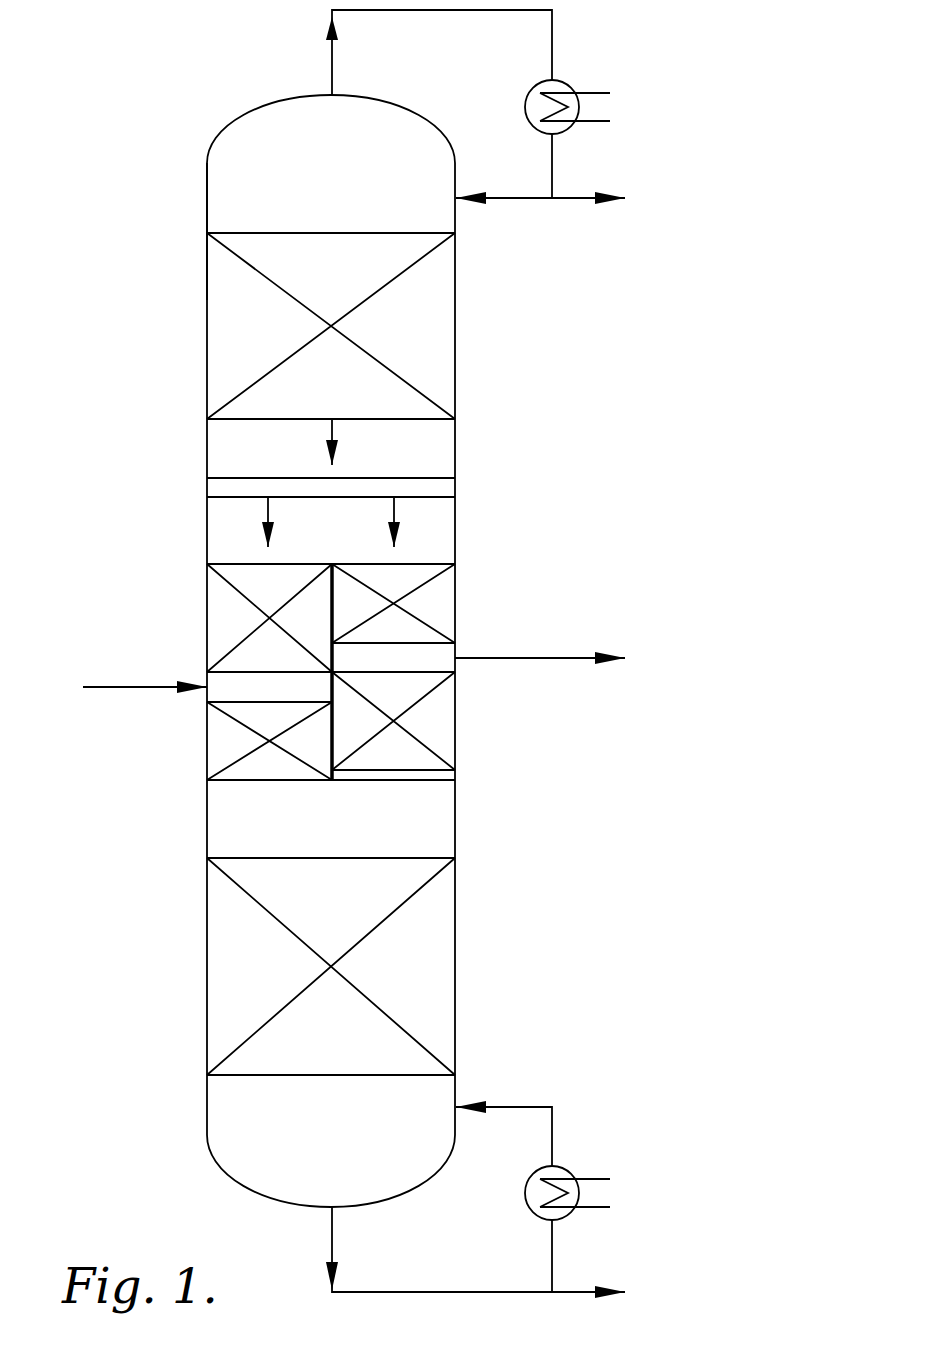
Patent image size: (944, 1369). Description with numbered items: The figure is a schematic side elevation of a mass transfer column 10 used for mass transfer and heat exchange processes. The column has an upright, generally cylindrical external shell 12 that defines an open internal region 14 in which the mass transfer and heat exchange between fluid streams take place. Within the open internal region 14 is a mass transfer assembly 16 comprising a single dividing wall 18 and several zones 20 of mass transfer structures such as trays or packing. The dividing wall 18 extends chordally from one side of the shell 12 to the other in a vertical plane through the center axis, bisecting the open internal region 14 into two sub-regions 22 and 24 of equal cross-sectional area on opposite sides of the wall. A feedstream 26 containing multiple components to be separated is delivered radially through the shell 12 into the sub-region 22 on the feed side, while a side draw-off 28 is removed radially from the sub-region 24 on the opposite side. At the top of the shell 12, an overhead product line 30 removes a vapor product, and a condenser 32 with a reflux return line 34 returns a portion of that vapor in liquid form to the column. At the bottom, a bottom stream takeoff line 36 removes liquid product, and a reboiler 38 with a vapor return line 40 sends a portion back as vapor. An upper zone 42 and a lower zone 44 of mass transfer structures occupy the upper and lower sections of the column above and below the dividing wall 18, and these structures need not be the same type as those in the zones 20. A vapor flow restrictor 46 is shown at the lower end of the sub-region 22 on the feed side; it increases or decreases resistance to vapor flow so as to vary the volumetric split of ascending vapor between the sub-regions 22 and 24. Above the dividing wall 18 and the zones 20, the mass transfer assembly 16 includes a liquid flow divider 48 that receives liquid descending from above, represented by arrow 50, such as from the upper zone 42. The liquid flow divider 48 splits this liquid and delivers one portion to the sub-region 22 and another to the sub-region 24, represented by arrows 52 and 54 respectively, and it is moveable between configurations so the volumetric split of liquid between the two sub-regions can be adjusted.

The mass transfer column 10 is at (228, 122).
The external shell 12 is at (206, 192).
The open internal region 14 is at (292, 135).
The mass transfer assembly 16 is at (339, 698).
The dividing wall 18 is at (332, 737).
The zones of mass transfer structures 20 is at (220, 604).
The sub-region 22 is at (280, 790).
The sub-region 24 is at (381, 790).
The feedstream 26 is at (115, 687).
The side draw-off 28 is at (535, 658).
The overhead product line 30 is at (332, 66).
The condenser 32 is at (572, 86).
The reflux return line 34 is at (527, 198).
The bottom stream takeoff line 36 is at (332, 1228).
The reboiler 38 is at (572, 1172).
The vapor return line 40 is at (527, 1107).
The upper zone 42 is at (453, 323).
The lower zone 44 is at (440, 952).
The vapor flow restrictor 46 is at (433, 775).
The liquid flow divider 48 is at (452, 484).
The arrow representing descending liquid 50 is at (332, 425).
The arrow representing liquid portion to first sub-region 52 is at (268, 503).
The arrow representing liquid portion to second sub-region 54 is at (394, 505).